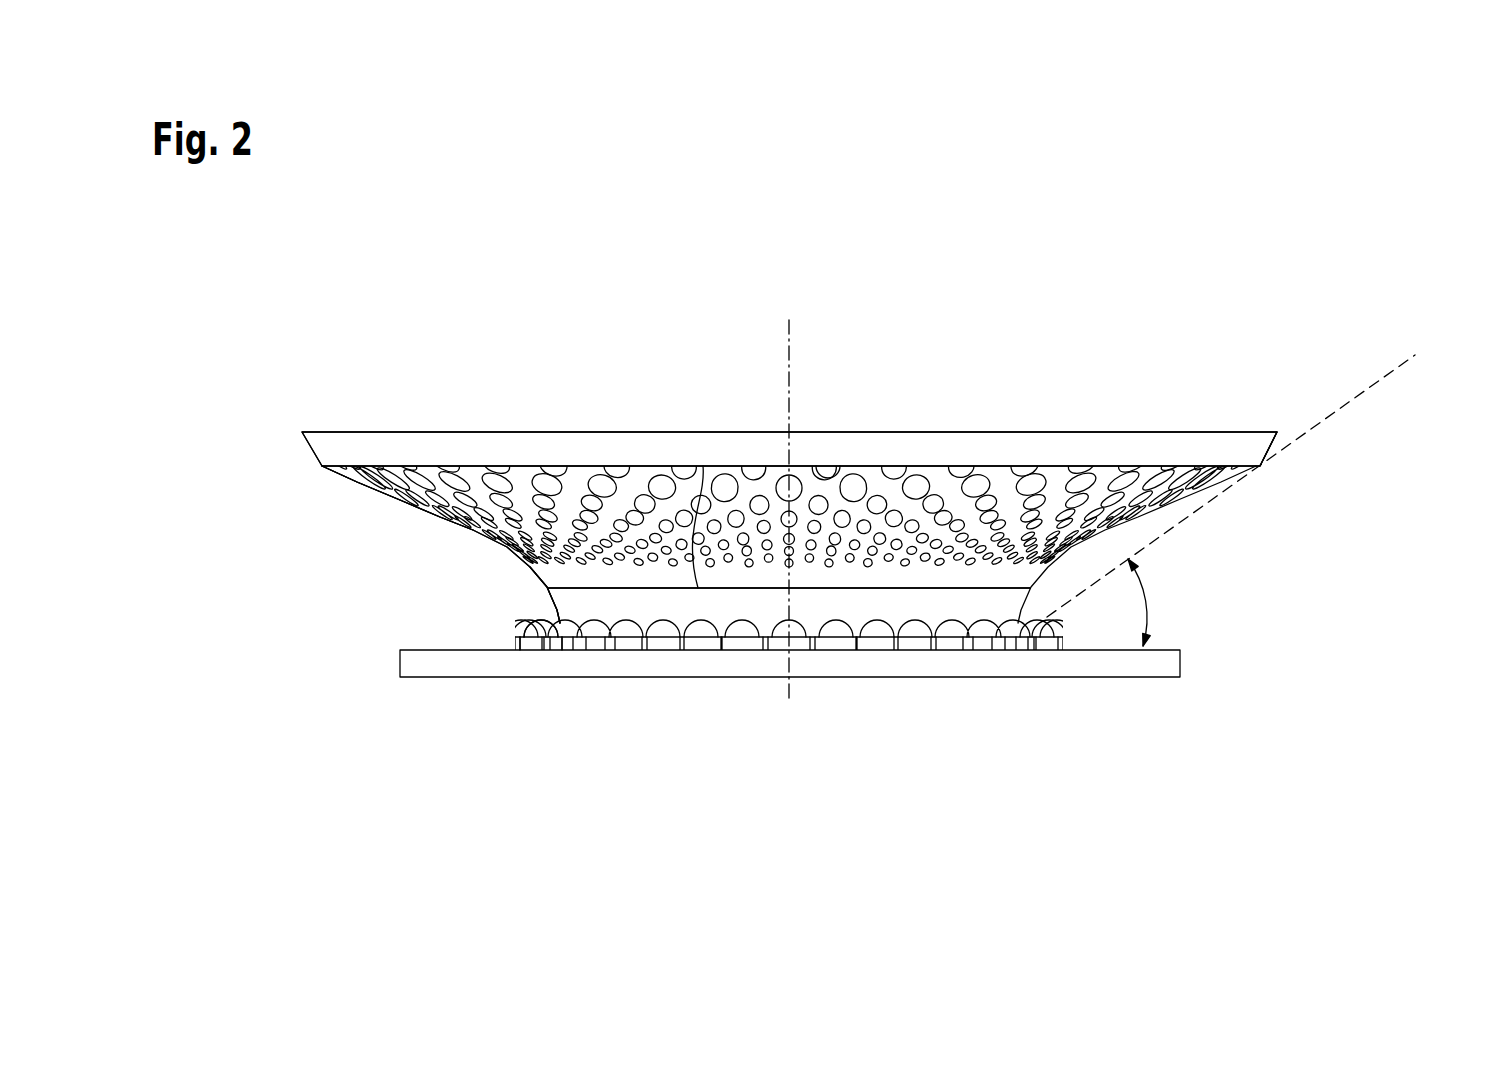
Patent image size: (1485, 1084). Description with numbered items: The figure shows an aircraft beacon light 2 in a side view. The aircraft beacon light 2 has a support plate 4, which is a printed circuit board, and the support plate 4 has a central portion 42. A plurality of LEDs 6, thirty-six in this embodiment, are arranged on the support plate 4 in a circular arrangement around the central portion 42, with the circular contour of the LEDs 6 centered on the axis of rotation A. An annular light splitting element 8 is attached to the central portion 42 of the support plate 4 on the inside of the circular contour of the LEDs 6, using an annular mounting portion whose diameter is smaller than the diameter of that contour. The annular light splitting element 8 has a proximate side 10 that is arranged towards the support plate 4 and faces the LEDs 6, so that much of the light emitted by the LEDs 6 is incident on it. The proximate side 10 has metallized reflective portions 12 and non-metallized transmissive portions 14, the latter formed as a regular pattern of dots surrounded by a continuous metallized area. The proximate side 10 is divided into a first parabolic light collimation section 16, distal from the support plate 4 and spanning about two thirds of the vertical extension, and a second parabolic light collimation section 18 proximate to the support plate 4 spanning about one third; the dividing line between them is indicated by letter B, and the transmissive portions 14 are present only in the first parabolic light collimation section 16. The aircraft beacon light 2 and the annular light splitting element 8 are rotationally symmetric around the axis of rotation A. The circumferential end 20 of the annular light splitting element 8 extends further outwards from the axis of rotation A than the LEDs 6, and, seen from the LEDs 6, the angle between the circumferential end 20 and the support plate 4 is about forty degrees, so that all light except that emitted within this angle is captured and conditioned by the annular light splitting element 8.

The aircraft beacon light 2 is at (1067, 322).
The support plate 4 is at (423, 663).
The LEDs 6 is at (548, 630).
The annular light splitting element 8 is at (973, 456).
The proximate side 10 is at (358, 588).
The reflective portions 12 is at (872, 478).
The transmissive portions 14 is at (828, 475).
The first parabolic light collimation section 16 is at (415, 505).
The second parabolic light collimation section 18 is at (575, 603).
The circumferential end 20 is at (1273, 447).
The central portion 42 is at (1012, 690).
The axis of rotation A is at (789, 327).
The dividing line B is at (703, 466).